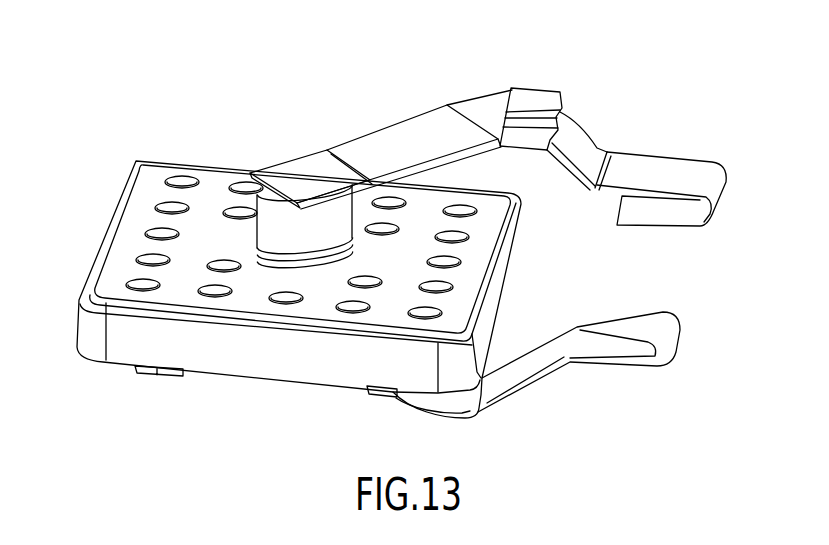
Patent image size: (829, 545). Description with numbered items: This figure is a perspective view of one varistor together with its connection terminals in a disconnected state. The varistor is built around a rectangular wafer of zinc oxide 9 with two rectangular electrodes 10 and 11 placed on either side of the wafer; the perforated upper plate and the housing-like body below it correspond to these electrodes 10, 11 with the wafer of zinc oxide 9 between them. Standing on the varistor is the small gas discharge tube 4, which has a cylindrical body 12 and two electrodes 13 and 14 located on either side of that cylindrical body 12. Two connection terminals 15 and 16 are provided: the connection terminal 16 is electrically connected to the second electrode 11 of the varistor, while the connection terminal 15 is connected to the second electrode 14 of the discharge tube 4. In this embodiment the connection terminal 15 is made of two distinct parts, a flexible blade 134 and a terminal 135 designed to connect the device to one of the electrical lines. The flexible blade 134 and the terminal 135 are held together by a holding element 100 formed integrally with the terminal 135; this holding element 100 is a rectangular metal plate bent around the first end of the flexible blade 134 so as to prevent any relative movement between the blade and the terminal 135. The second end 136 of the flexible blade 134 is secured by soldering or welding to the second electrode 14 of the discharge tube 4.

The gas discharge tube 4 is at (362, 216).
The wafer of zinc oxide 9 is at (128, 338).
The electrode 10 is at (108, 284).
The electrode 11 is at (157, 372).
The cylindrical body 12 is at (276, 223).
The electrode 13 is at (305, 267).
The electrode 14 is at (252, 188).
The connection terminal 15 is at (660, 176).
The connection terminal 16 is at (607, 352).
The holding element 100 is at (532, 92).
The flexible blade 134 is at (396, 138).
The terminal 135 is at (589, 147).
The second end 136 is at (303, 178).